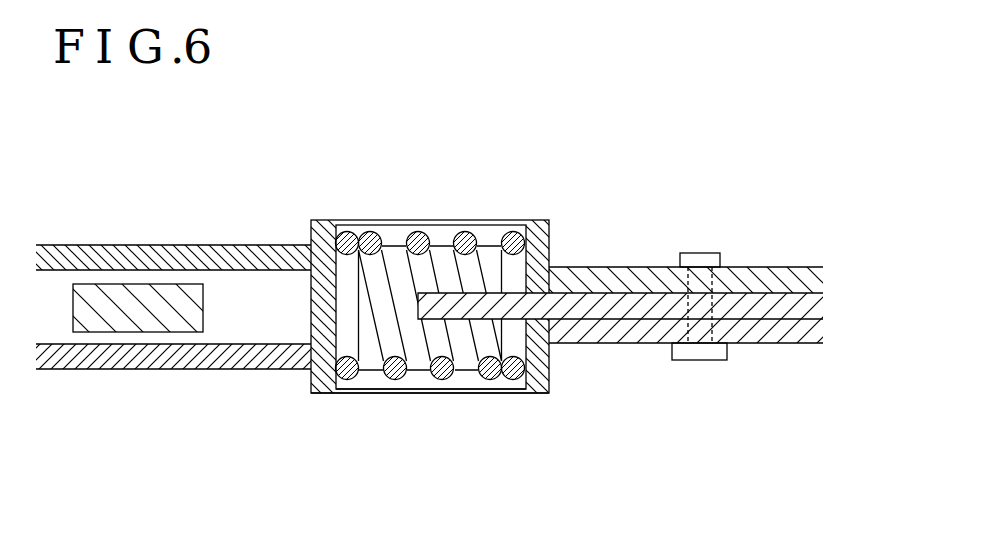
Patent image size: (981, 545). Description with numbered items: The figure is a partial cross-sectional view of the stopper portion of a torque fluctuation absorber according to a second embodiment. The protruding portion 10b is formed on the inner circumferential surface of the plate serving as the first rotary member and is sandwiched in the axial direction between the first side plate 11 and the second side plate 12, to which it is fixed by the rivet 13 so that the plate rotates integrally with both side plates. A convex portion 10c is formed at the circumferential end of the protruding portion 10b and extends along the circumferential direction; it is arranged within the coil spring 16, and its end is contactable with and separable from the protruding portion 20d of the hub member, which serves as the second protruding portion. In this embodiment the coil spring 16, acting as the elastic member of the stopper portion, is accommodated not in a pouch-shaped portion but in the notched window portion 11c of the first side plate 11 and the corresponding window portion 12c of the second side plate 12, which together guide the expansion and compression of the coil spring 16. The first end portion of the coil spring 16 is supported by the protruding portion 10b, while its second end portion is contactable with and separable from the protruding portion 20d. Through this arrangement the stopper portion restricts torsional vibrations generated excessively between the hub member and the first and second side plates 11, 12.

The second side plate 12 is at (172, 247).
The first side plate 11 is at (208, 358).
The protruding portion 20d is at (137, 325).
The window portion 12c is at (397, 230).
The window portion 11c is at (470, 380).
The coil spring 16 is at (390, 383).
The protruding portion 10b is at (628, 305).
The convex portion 10c is at (496, 302).
The rivet 13 is at (696, 260).